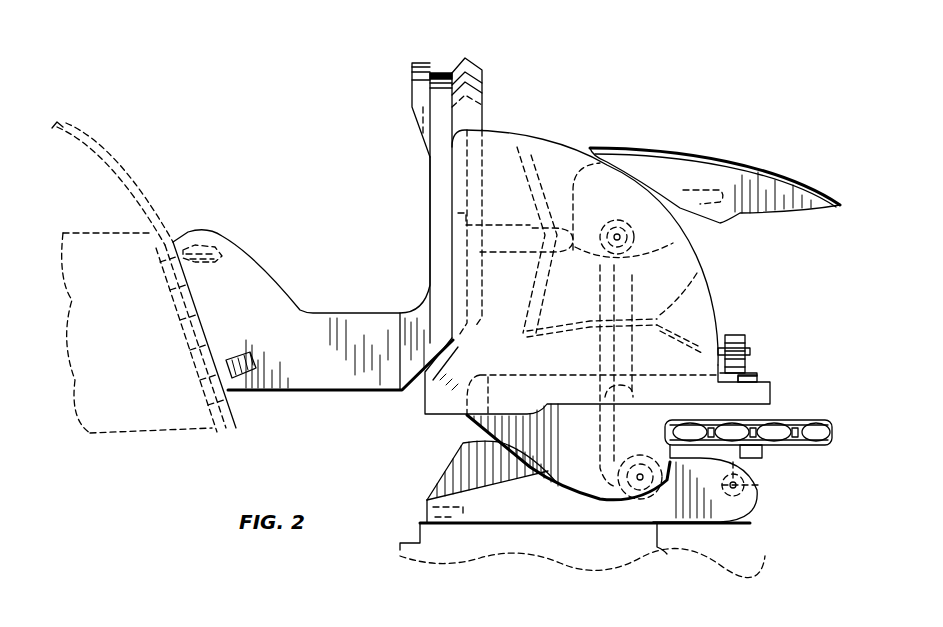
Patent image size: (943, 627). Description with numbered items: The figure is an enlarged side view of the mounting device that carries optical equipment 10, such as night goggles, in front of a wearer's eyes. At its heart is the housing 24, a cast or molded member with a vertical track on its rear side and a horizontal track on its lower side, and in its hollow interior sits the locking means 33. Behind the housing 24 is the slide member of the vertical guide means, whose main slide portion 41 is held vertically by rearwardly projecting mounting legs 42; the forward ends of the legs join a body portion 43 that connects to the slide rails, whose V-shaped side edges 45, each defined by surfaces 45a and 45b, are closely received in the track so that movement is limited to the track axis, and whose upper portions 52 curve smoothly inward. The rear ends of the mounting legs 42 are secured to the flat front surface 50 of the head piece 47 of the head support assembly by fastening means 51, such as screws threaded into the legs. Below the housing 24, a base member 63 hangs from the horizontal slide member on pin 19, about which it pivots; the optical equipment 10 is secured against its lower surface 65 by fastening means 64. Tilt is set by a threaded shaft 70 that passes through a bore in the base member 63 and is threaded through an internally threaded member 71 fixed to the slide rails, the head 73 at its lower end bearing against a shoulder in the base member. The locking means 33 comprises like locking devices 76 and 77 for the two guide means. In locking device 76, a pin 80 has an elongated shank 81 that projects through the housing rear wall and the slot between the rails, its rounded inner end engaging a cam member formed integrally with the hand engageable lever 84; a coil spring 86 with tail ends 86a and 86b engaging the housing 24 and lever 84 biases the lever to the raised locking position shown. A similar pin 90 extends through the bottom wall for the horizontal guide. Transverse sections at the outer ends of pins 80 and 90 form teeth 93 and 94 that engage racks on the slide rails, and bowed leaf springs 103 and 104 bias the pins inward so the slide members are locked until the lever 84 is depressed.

The optical equipment 10 is at (553, 562).
The pin 19 is at (640, 474).
The housing 24 is at (563, 142).
The locking means 33 is at (678, 315).
The main slide portion 41 is at (440, 70).
The mounting legs 42 is at (277, 292).
The body portion 43 is at (423, 117).
The V-shaped side edges 45 is at (452, 177).
The surface 45a is at (452, 261).
The surface 45b is at (452, 282).
The head piece 47 is at (233, 430).
The flat front surface 50 is at (178, 308).
The fastening means 51 is at (196, 248).
The upper portions 52 is at (478, 72).
The base member 63 is at (490, 523).
The fastening means 64 is at (424, 508).
The lower surface 65 is at (518, 523).
The threaded shaft 70 is at (742, 340).
The internally threaded member 71 is at (762, 376).
The head 73 is at (748, 488).
The locking device 76 is at (550, 227).
The locking device 77 is at (632, 357).
The pin 80 is at (452, 212).
The shank 81 is at (499, 179).
The lever 84 is at (812, 185).
The coil spring 86 is at (633, 162).
The tail end 86a is at (614, 323).
The tail end 86b is at (685, 188).
The pin 90 is at (613, 353).
The teeth 93 is at (466, 230).
The teeth 94 is at (637, 392).
The bowed leaf spring 103 is at (537, 132).
The bowed leaf spring 104 is at (703, 272).